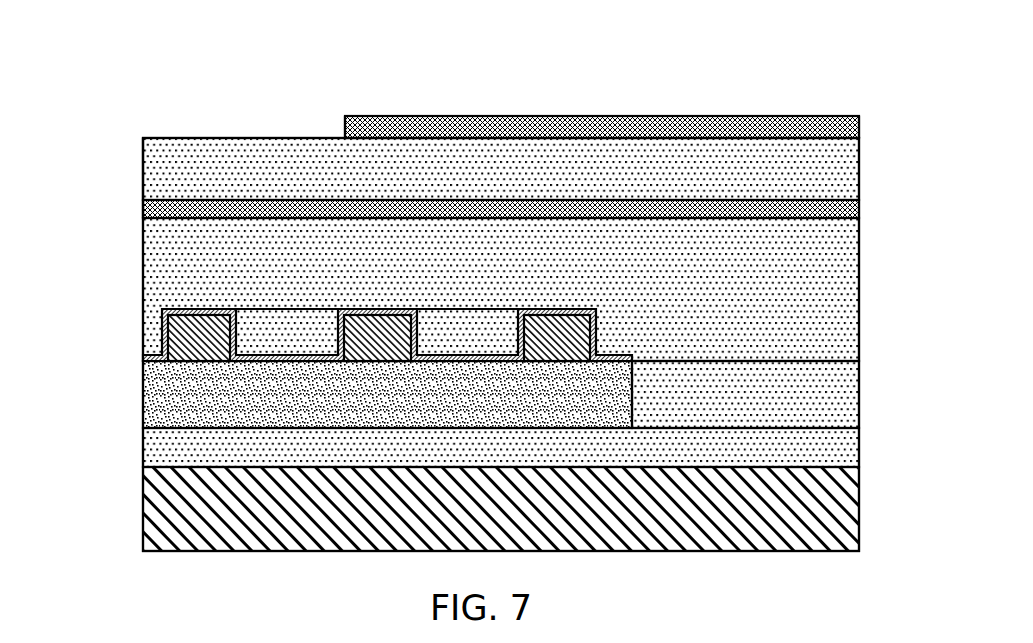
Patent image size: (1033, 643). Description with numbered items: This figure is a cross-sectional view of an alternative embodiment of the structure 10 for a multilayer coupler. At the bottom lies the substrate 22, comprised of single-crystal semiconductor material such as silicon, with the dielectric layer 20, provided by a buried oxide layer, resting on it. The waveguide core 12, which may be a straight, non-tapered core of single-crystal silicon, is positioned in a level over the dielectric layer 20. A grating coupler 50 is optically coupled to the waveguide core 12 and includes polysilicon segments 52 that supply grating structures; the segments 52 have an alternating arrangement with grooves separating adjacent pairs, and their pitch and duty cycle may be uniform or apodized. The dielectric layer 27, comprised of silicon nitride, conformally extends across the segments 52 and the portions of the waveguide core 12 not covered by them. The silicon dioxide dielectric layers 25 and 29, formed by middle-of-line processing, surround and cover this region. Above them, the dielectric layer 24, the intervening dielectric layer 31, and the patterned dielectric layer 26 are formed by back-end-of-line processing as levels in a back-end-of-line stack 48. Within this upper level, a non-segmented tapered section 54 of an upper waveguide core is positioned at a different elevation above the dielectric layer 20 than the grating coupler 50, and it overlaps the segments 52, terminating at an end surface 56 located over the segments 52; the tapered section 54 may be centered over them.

The structure 10 is at (146, 101).
The waveguide core 12 is at (188, 398).
The dielectric layer 20 is at (820, 448).
The substrate 22 is at (830, 518).
The dielectric layer 24 is at (820, 211).
The dielectric layer 25 is at (820, 393).
The patterned dielectric layer 26 is at (878, 121).
The dielectric layer 27 is at (160, 318).
The dielectric layer 29 is at (828, 259).
The dielectric layer 31 is at (832, 168).
The back-end-of-line stack 48 is at (125, 138).
The grating coupler 50 is at (168, 73).
The segments 52 is at (190, 345).
The tapered section 54 is at (686, 115).
The end surface 56 is at (344, 128).